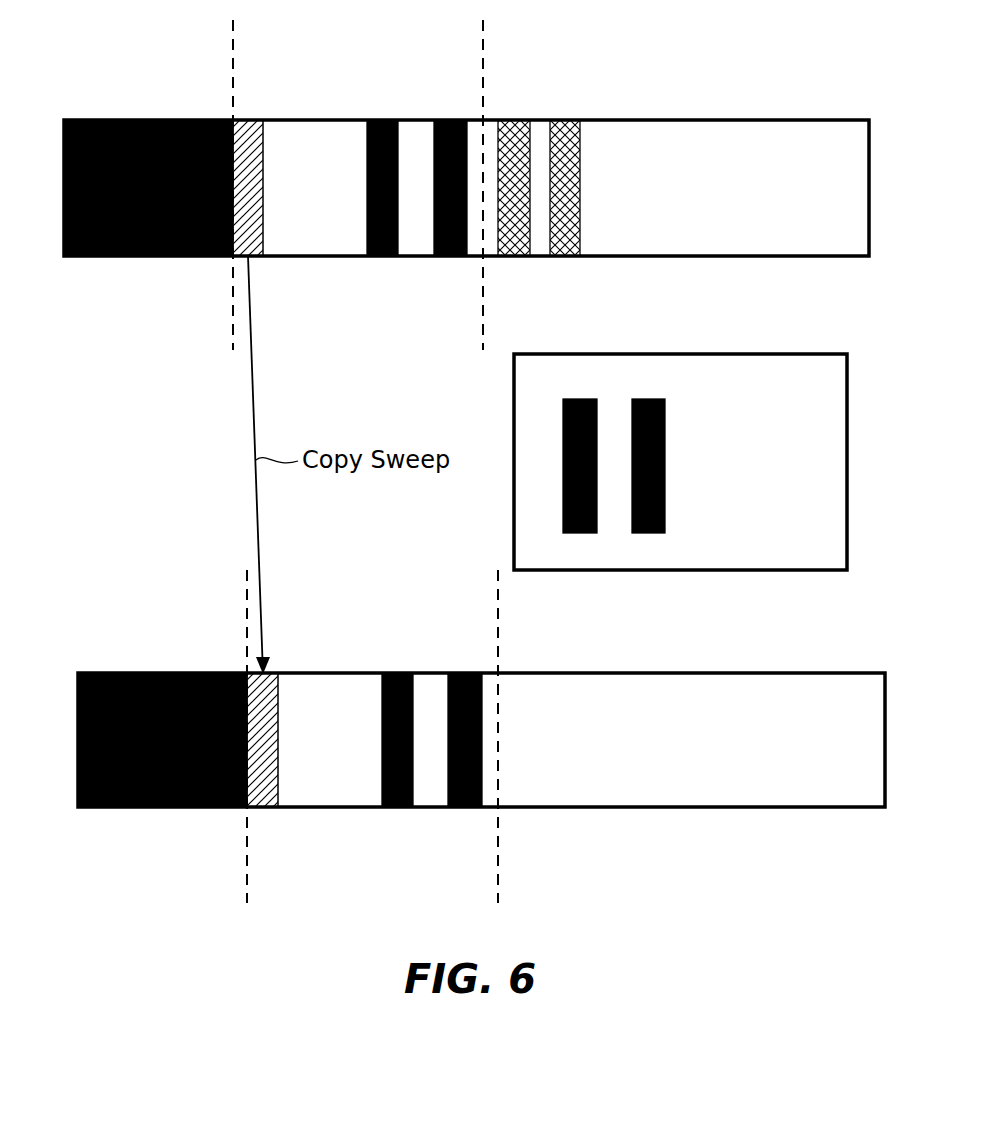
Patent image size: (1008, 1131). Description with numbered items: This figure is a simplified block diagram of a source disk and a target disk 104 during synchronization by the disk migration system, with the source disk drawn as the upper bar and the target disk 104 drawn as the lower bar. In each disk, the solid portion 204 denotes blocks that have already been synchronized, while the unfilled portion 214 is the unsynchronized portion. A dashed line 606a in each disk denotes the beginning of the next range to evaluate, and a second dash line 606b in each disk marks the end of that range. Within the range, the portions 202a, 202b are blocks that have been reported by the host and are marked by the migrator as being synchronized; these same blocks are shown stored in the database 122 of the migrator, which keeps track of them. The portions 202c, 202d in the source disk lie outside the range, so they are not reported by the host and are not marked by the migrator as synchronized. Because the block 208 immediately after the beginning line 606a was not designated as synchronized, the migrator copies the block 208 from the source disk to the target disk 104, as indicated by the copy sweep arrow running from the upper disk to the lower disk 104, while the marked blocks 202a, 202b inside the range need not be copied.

The target disk 104 is at (773, 673).
The database 122 is at (768, 426).
The portion 202a is at (381, 258).
The portion 202b is at (451, 120).
The portion 202c is at (511, 258).
The portion 202d is at (566, 120).
The portion 204 is at (149, 120).
The block 208 is at (258, 120).
The unfilled portion 214 is at (337, 145).
The dashed line 606a is at (233, 311).
The dash line 606b is at (483, 345).